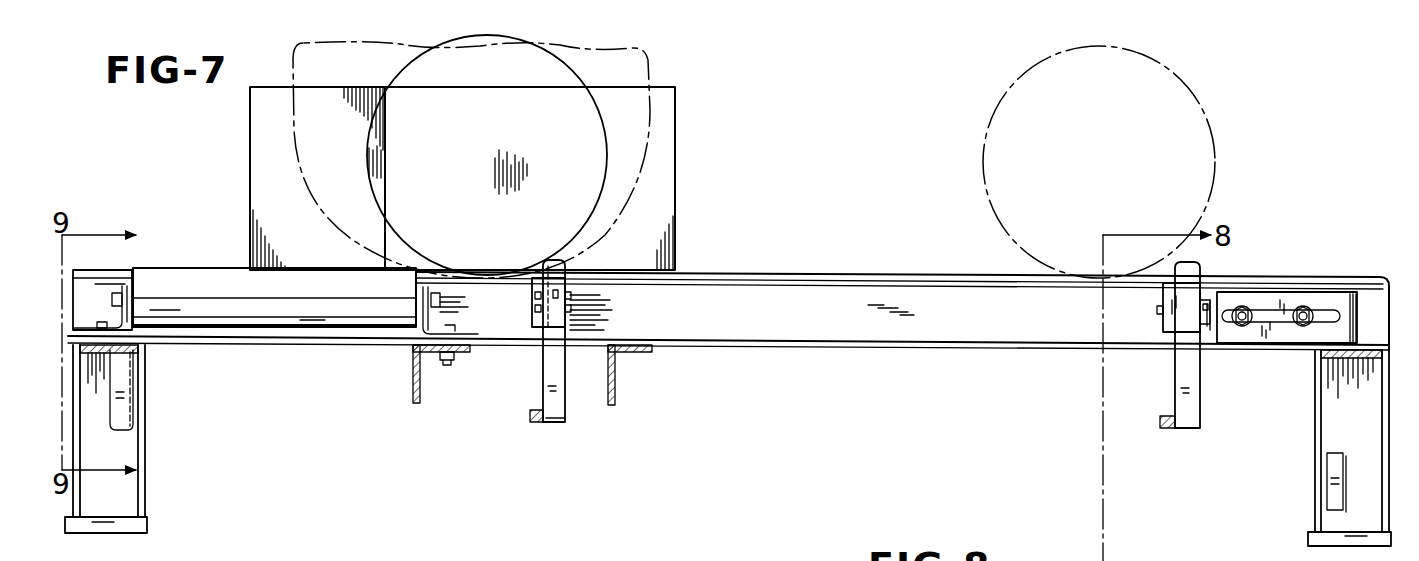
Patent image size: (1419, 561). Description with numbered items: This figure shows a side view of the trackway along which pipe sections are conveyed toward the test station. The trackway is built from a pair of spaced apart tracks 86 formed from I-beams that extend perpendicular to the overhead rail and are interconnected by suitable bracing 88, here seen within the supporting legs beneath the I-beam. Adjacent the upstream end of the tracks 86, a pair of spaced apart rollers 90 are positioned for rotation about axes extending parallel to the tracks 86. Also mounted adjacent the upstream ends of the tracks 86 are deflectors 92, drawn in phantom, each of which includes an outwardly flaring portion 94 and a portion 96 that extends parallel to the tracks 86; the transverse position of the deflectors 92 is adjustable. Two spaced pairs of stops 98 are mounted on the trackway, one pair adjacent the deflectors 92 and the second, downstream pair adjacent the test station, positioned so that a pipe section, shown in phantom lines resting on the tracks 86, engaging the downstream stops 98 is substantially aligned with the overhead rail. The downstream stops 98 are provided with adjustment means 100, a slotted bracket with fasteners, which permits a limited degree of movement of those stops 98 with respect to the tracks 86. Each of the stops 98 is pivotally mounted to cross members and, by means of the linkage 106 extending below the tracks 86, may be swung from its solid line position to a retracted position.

The tracks 86 is at (838, 330).
The bracing 88 is at (130, 392).
The rollers 90 is at (212, 284).
The deflectors 92 is at (690, 111).
The outwardly flaring portion 94 is at (266, 192).
The portion extending parallel to tracks 96 is at (668, 181).
The stops 98 is at (560, 266).
The adjustment means 100 is at (1277, 300).
The linkage 106 is at (543, 378).